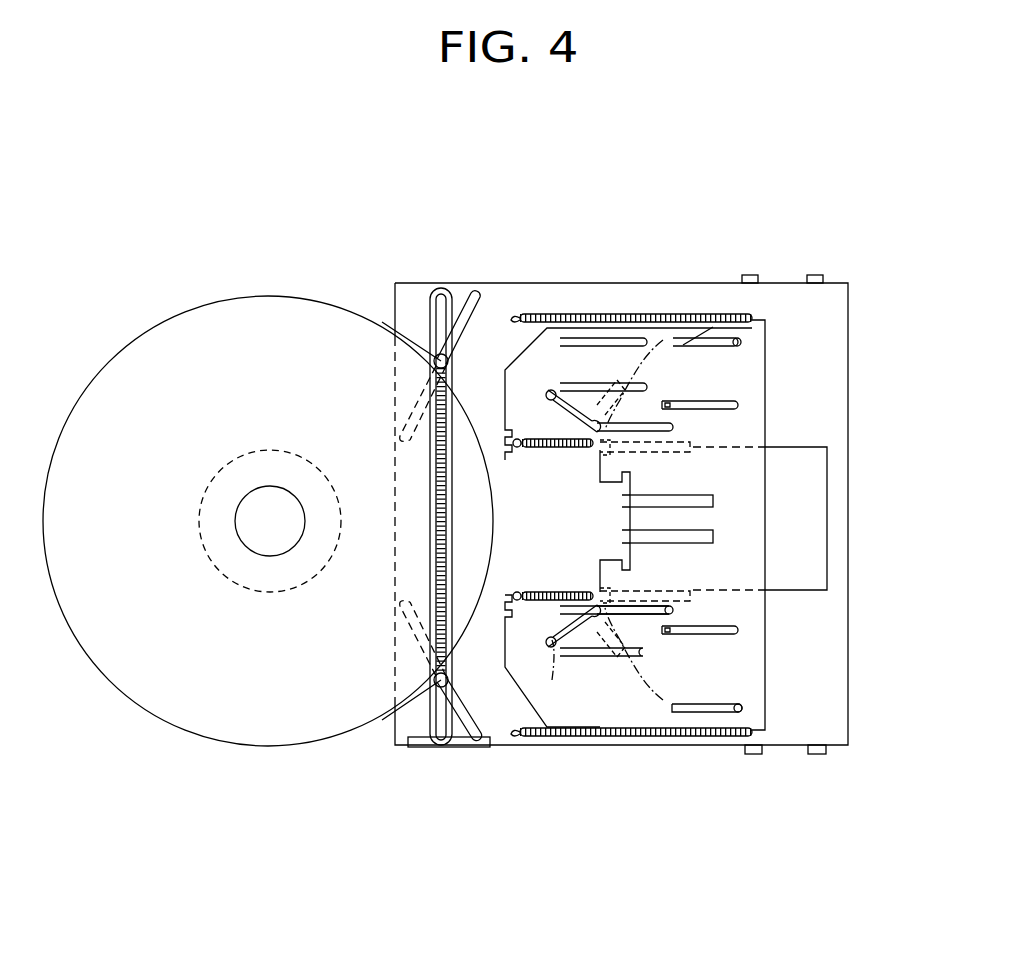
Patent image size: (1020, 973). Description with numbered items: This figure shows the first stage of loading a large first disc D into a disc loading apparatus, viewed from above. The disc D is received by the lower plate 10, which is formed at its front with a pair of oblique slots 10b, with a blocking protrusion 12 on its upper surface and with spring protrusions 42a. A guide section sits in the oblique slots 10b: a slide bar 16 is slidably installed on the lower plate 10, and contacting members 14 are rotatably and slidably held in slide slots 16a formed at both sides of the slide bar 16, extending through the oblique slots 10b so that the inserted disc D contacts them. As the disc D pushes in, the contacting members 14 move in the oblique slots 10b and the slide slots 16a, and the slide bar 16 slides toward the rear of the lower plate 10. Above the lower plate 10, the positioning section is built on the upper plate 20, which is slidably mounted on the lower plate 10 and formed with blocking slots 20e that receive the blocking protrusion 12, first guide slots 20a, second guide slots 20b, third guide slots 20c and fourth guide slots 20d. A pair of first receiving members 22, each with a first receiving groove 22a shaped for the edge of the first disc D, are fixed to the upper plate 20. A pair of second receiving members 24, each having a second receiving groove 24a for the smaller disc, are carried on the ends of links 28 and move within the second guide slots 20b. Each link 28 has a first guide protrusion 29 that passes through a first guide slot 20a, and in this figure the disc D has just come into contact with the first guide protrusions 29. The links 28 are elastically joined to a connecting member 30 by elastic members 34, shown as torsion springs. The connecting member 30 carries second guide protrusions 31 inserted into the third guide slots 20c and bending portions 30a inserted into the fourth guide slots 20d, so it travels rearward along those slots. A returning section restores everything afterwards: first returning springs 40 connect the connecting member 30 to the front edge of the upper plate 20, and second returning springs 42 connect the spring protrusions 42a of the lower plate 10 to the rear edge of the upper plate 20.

The first disc D is at (175, 710).
The lower plate 10 is at (778, 750).
The oblique slots 10b is at (466, 748).
The blocking protrusion 12 is at (736, 712).
The contacting members 14 is at (430, 717).
The slide bar 16 is at (397, 745).
The slide slots 16a is at (430, 747).
The upper plate 20 is at (758, 662).
The first guide slots 20a is at (580, 350).
The second guide slots 20b is at (677, 427).
The third guide slots 20c is at (693, 446).
The fourth guide slots 20d is at (713, 503).
The blocking slots 20e is at (697, 708).
The first receiving members 22 is at (725, 318).
The first receiving groove 22a is at (683, 313).
The second receiving members 24 is at (598, 660).
The second receiving groove 24a is at (556, 685).
The links 28 is at (462, 292).
The first guide protrusion 29 is at (551, 388).
The connecting member 30 is at (627, 520).
The bending portions 30a is at (630, 497).
The second guide protrusions 31 is at (628, 357).
The elastic members 34 is at (578, 410).
The first returning springs 40 is at (512, 700).
The second returning springs 42 is at (520, 313).
The spring protrusions 42a is at (478, 292).